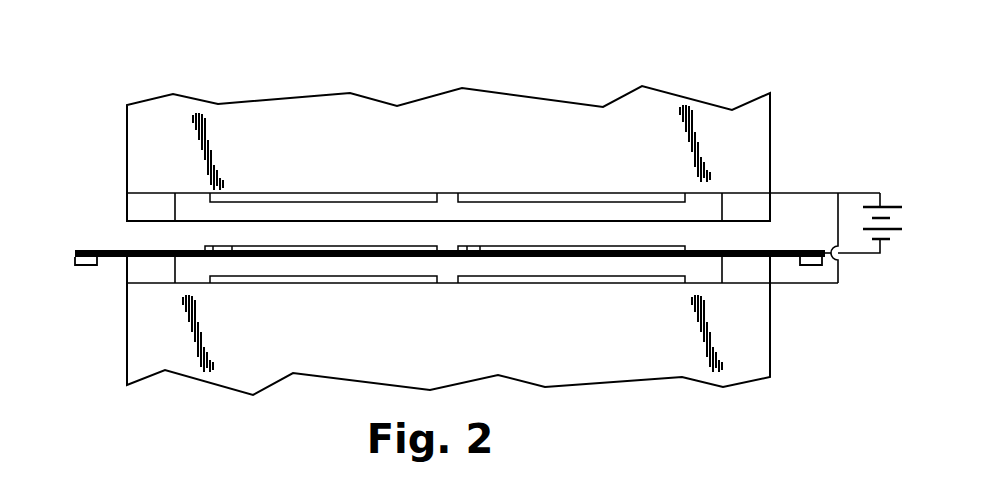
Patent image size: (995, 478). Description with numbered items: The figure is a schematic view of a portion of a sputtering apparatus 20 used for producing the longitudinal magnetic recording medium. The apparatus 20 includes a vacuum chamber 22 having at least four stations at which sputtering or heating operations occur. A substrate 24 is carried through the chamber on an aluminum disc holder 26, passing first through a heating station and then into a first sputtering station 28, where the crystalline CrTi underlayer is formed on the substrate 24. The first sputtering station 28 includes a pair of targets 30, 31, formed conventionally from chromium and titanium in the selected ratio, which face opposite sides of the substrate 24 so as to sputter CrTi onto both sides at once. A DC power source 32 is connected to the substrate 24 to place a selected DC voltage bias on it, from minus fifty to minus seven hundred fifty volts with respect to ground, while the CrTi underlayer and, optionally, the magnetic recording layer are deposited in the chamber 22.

The sputtering apparatus 20 is at (574, 55).
The vacuum chamber 22 is at (104, 230).
The substrate 24 is at (603, 250).
The aluminum disc holder 26 is at (112, 258).
The first sputtering station 28 is at (581, 269).
The target 30 is at (638, 282).
The target 31 is at (505, 197).
The DC power source 32 is at (881, 206).